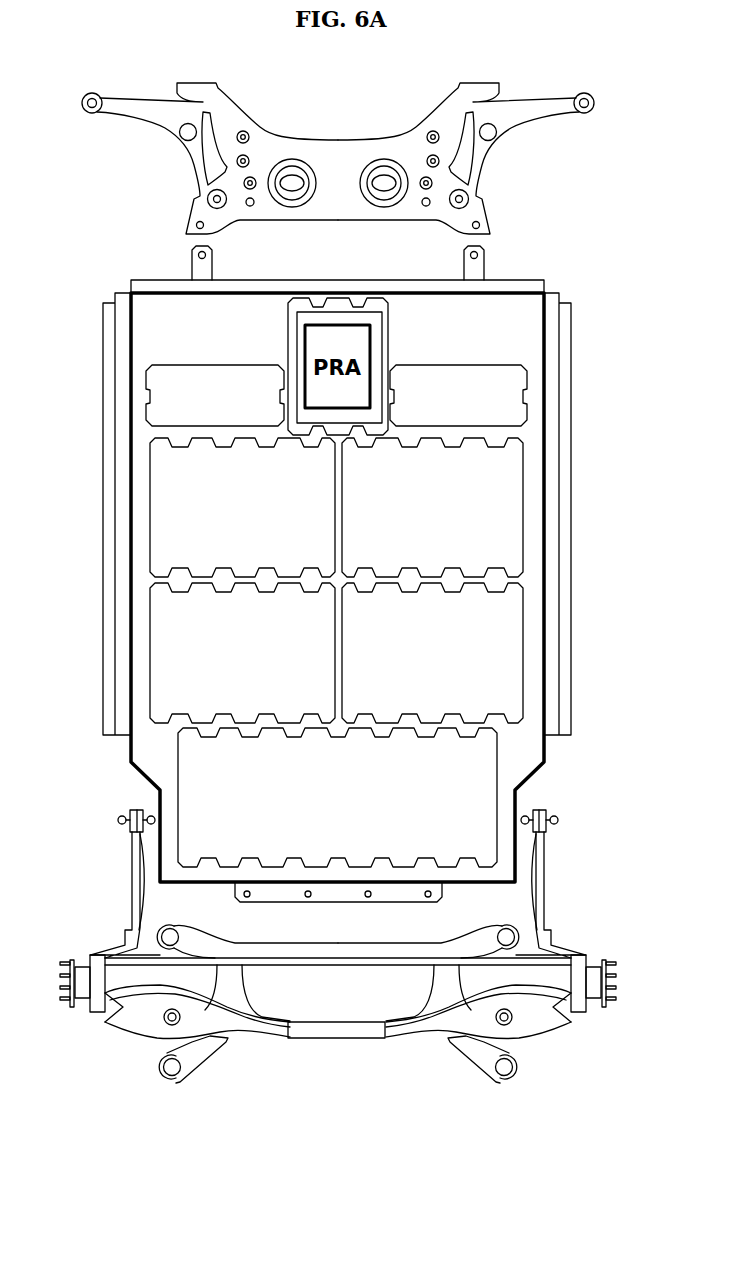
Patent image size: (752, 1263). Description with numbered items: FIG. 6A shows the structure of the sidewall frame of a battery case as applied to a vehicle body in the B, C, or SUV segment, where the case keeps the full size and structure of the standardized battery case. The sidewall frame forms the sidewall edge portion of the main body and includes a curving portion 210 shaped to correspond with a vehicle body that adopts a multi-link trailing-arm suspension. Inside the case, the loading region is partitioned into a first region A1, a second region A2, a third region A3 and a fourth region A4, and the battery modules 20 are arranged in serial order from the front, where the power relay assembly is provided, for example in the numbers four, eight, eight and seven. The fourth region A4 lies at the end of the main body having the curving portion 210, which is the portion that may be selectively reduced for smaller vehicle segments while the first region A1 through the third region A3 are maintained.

The battery modules 20 is at (500, 402).
The curving portion 210 is at (140, 777).
The first region A1 is at (205, 400).
The second region A2 is at (468, 516).
The third region A3 is at (468, 661).
The fourth region A4 is at (445, 793).